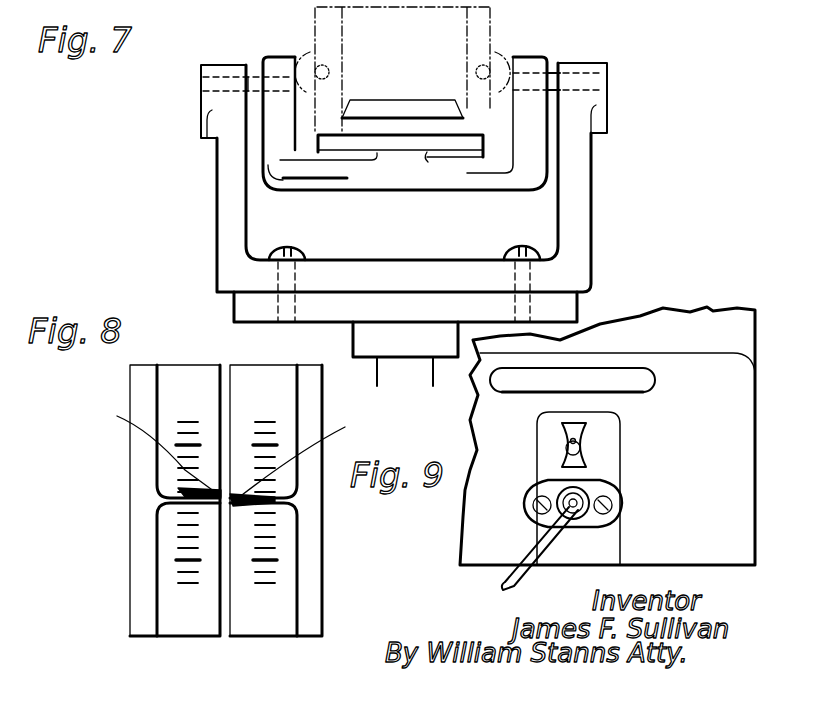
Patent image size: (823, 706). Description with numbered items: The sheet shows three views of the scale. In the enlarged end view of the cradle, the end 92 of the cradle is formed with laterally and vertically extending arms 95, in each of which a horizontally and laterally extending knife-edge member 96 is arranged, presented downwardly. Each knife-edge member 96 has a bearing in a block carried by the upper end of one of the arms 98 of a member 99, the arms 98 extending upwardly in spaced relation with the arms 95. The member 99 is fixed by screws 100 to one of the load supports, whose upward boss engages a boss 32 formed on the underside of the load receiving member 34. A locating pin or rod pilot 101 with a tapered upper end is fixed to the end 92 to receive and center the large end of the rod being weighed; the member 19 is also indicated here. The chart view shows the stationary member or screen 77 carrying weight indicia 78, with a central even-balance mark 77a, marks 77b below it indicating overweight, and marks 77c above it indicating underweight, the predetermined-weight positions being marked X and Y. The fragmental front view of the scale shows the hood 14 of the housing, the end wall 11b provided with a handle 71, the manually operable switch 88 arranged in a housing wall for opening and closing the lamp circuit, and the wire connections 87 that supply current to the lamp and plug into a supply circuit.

In FIG. 7, the arms 98 is at (230, 178).
In FIG. 7, the knife-edge member 96 is at (252, 75).
In FIG. 7, the arms 95 is at (525, 62).
In FIG. 7, the locating pin or rod pilot 101 is at (393, 107).
In FIG. 7, the end 92 is at (425, 187).
In FIG. 7, the screws 100 is at (298, 248).
In FIG. 7, the member 99 is at (383, 268).
In FIG. 7, the load receiving member 34 is at (240, 306).
In FIG. 7, the boss 32 is at (405, 354).
In FIG. 7, the member 19 is at (704, 7).
In FIG. 8, the stationary member or screen 77 is at (128, 468).
In FIG. 8, the weight indicia marks 77c is at (260, 414).
In FIG. 8, the even-balance mark 77a is at (337, 512).
In FIG. 8, the weight indicia 78 is at (172, 541).
In FIG. 8, the marks 77b is at (338, 633).
In FIG. 9, the hood 14 is at (713, 300).
In FIG. 9, the handle 71 is at (657, 378).
In FIG. 9, the manually operable switch 88 is at (583, 450).
In FIG. 9, the wire connections 87 is at (496, 592).
In FIG. 9, the end wall 11b is at (483, 537).